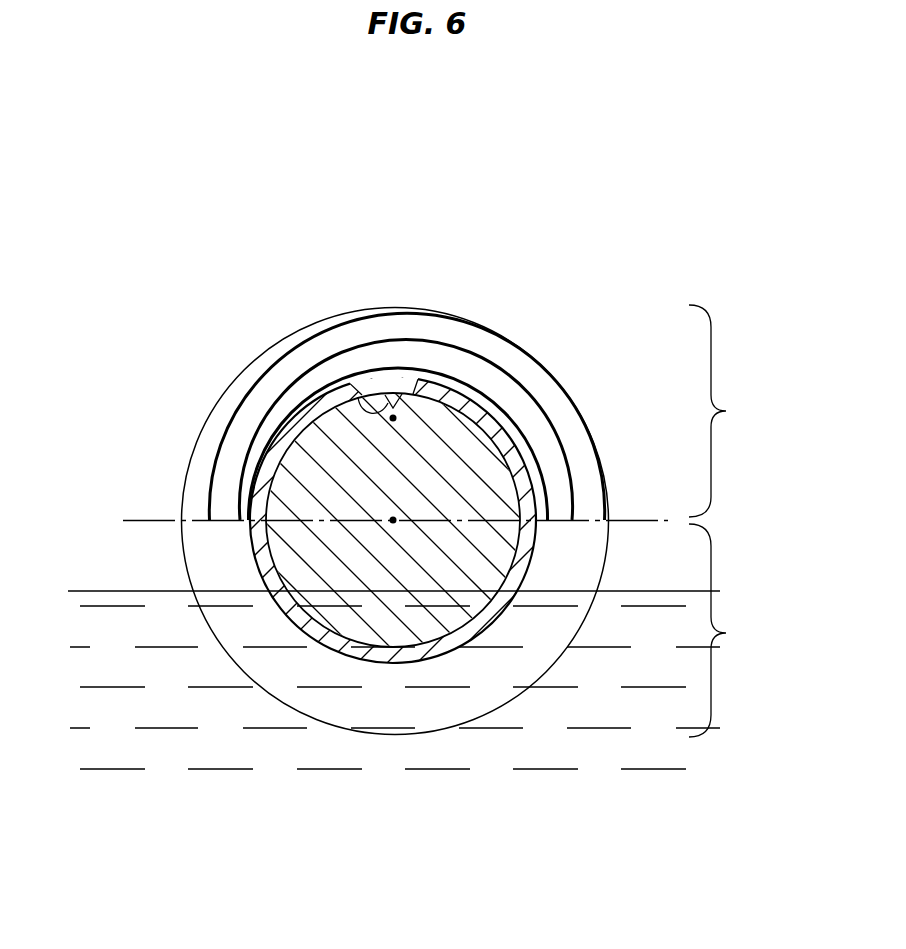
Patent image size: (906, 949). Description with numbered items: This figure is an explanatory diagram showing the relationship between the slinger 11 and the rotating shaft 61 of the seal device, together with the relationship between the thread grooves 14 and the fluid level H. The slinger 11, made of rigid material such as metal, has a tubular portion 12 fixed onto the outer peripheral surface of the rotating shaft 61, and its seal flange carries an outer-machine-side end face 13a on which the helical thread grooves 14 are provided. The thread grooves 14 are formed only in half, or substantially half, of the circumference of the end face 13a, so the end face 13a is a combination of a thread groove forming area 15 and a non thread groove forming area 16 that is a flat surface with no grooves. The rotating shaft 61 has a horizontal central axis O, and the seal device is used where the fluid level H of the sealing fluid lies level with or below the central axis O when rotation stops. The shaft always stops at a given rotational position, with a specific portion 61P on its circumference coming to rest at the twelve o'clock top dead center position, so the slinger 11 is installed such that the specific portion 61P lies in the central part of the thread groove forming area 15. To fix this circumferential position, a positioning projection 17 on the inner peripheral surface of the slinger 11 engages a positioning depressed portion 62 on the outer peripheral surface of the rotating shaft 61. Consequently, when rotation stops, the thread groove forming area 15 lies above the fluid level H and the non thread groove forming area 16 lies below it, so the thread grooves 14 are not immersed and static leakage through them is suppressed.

The slinger 11 is at (288, 326).
The outer-machine-side end face 13a is at (253, 370).
The thread grooves 14 is at (222, 430).
The tubular portion 12 is at (266, 477).
The rotating shaft 61 is at (440, 650).
The positioning depressed portion 62 is at (393, 407).
The positioning projection 17 is at (360, 398).
The specific portion 61P is at (395, 415).
The central axis O is at (393, 523).
The fluid level H is at (110, 590).
The thread groove forming area 15 is at (725, 411).
The non thread groove forming area 16 is at (415, 646).